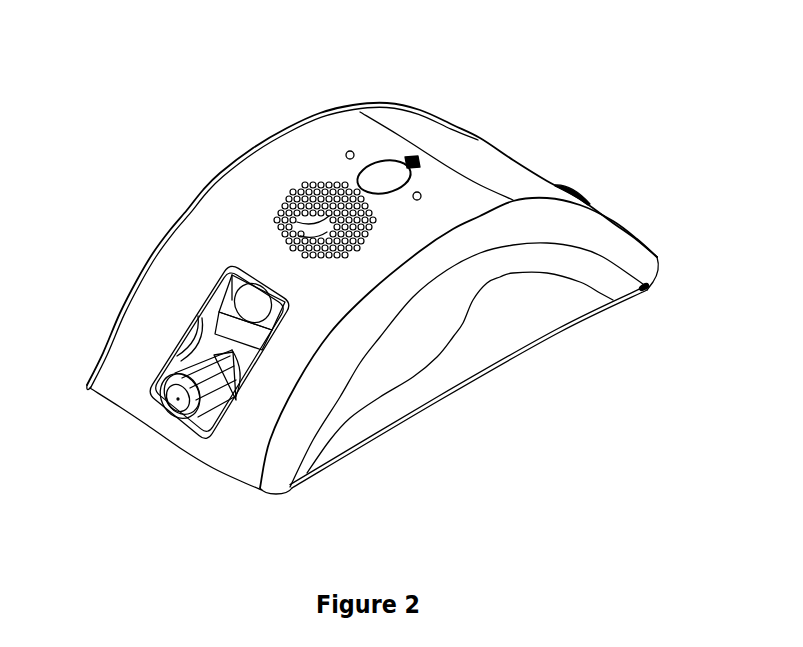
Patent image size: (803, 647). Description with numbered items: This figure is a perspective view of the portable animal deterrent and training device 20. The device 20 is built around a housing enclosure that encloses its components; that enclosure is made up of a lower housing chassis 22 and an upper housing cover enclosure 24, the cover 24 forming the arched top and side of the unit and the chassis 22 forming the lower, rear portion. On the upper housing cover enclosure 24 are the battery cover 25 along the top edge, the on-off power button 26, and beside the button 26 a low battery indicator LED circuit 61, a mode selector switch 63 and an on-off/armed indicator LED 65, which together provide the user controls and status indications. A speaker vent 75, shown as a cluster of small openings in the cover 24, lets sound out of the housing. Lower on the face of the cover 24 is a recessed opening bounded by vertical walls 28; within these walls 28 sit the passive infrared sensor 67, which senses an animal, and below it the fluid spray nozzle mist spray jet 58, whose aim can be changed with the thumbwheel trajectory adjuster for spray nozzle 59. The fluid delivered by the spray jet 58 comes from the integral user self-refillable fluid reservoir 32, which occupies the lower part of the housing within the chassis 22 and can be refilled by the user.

The portable animal deterrent and training device 20 is at (247, 88).
The lower housing chassis 22 is at (607, 270).
The upper housing cover enclosure 24 is at (192, 245).
The battery cover 25 is at (390, 120).
The on-off power button 26 is at (370, 177).
The vertical walls 28 is at (218, 304).
The integral user self-refillable fluid reservoir 32 is at (505, 343).
The fluid spray nozzle mist spray jet 58 is at (178, 397).
The thumbwheel trajectory adjuster for spray nozzle 59 is at (175, 356).
The low battery indicator LED circuit 61 is at (353, 157).
The mode selector switch 63 is at (417, 160).
The on-off/armed indicator LED 65 is at (420, 193).
The passive infrared sensor 67 is at (247, 303).
The speaker vent 75 is at (273, 207).